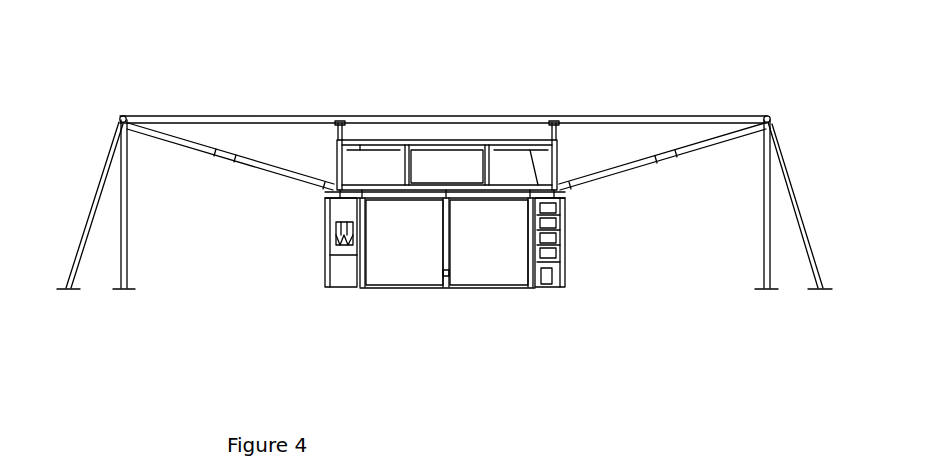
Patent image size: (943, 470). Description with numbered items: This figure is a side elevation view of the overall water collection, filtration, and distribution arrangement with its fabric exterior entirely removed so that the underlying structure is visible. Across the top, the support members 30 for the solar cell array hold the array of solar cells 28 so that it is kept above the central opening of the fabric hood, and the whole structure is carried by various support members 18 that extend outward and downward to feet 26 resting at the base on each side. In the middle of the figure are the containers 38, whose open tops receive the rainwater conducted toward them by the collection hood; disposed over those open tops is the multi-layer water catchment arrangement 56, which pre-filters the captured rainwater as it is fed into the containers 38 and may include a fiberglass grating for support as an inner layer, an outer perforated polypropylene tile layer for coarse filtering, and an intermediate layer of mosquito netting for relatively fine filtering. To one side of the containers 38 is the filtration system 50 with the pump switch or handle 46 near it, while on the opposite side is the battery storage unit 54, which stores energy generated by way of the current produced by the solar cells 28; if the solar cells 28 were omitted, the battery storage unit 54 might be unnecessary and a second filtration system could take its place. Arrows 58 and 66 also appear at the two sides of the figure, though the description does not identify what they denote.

The support members 18 is at (277, 162).
The feet 26 is at (118, 293).
The solar cells 28 is at (437, 143).
The support members for the solar cell array 30 is at (480, 160).
The containers 38 is at (400, 263).
The pump switch or handle 46 is at (334, 236).
The filtration system 50 is at (316, 269).
The battery storage unit 54 is at (572, 237).
The multi-layer water catchment arrangement 56 is at (383, 190).
The direction arrow 58 is at (830, 197).
The direction arrow 66 is at (72, 198).